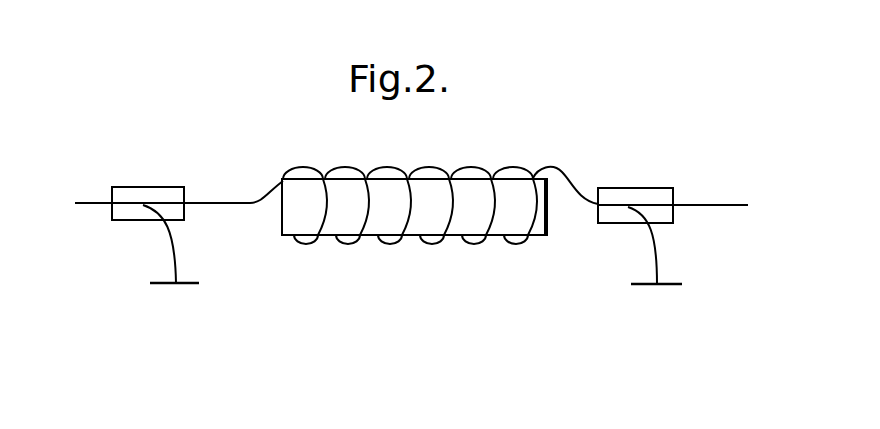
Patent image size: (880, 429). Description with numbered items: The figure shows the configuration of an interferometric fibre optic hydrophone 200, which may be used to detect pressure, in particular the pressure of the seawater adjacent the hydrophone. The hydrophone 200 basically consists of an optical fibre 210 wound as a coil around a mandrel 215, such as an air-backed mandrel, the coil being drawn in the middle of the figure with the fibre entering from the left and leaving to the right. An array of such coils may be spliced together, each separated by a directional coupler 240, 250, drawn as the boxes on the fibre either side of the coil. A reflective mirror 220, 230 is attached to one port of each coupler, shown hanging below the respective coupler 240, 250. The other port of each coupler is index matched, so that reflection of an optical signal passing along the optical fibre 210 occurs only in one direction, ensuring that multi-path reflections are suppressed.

The interferometric fibre optic hydrophone 200 is at (468, 130).
The optical fibre 210 is at (292, 171).
The mandrel 215 is at (282, 222).
The reflective mirror 220 is at (197, 284).
The reflective mirror 230 is at (652, 285).
The directional coupler 240 is at (142, 187).
The directional coupler 250 is at (638, 188).